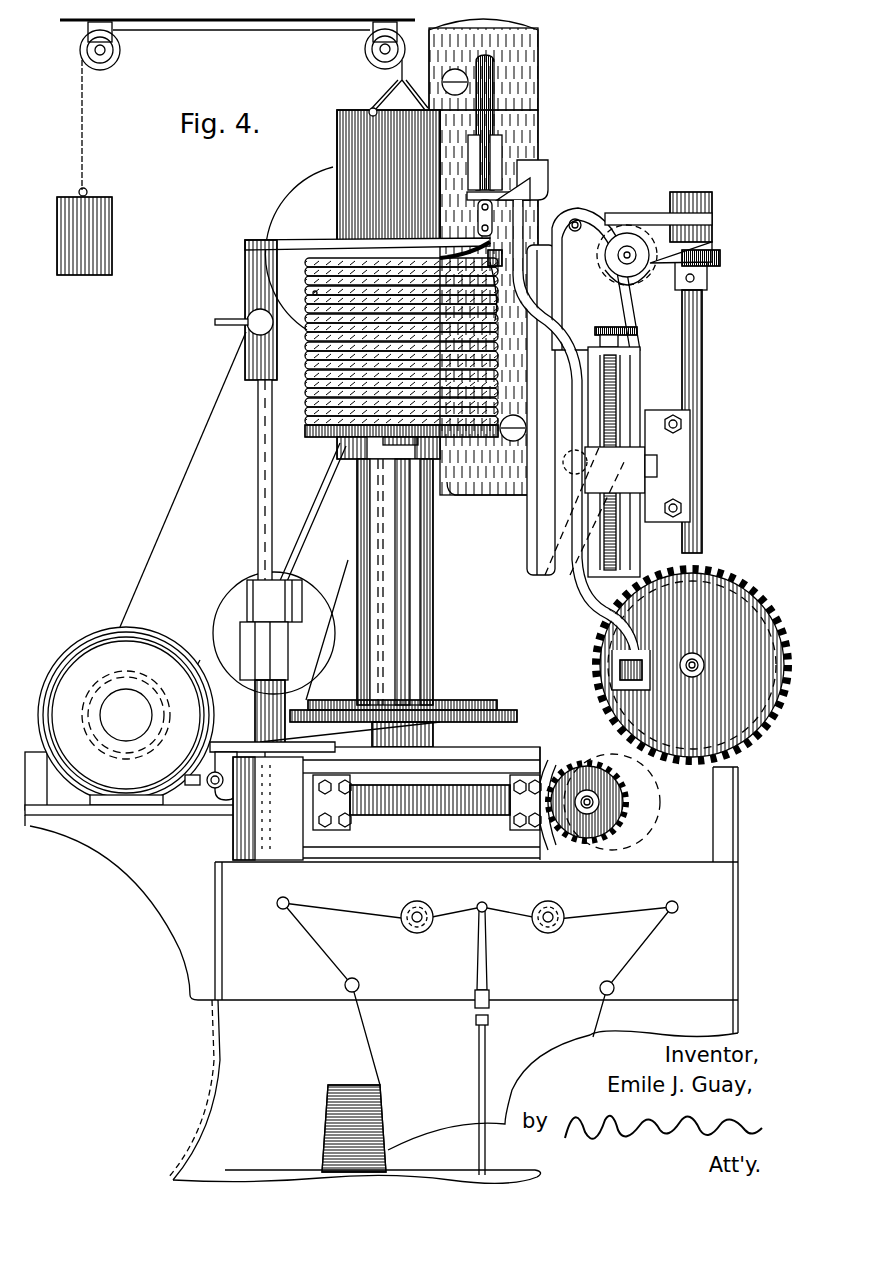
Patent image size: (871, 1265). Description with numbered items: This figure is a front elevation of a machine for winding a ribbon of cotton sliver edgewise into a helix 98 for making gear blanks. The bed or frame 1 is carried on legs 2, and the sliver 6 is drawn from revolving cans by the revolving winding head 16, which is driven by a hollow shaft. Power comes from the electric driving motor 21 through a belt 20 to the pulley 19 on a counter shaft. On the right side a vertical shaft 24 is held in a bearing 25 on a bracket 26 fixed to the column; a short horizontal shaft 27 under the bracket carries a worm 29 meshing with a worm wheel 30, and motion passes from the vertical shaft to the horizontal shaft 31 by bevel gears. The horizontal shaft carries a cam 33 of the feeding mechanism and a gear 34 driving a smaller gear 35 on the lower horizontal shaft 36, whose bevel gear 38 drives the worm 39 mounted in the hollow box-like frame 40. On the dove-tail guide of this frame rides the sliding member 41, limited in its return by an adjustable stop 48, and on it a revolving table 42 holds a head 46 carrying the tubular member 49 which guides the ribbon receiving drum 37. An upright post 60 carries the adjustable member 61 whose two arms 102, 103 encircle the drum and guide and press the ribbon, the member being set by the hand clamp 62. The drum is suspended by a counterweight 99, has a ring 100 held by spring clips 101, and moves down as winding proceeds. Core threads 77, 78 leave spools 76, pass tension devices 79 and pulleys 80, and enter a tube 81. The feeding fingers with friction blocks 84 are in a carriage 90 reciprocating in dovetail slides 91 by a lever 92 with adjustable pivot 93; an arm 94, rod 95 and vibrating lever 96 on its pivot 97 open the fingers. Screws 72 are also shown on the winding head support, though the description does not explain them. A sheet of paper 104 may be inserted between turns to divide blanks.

The bed or frame 1 is at (476, 900).
The legs 2 is at (220, 1067).
The sliver 6 is at (495, 112).
The revolving winding head 16 is at (533, 144).
The pulley 19 is at (330, 186).
The belt 20 is at (194, 450).
The electric driving motor 21 is at (130, 721).
The vertical shaft 24 is at (703, 358).
The bearing 25 is at (713, 212).
The bracket 26 is at (632, 232).
The short horizontal shaft 27 is at (634, 291).
The worm 29 is at (690, 284).
The worm wheel 30 is at (722, 258).
The horizontal shaft 31 is at (705, 668).
The cam 33 is at (620, 660).
The gear 34 is at (762, 738).
The smaller gear 35 is at (640, 835).
The lower horizontal shaft 36 is at (600, 803).
The ribbon receiving drum 37 is at (388, 176).
The bevel gear 38 is at (545, 852).
The worm 39 is at (450, 816).
The hollow box-like frame 40 is at (268, 808).
The sliding member 41 is at (512, 752).
The revolving table 42 is at (515, 711).
The head 46 is at (465, 702).
The adjustable stop 48 is at (203, 785).
The tubular member 49 is at (433, 556).
The upright post 60 is at (258, 460).
The adjustable member 61 is at (300, 244).
The hand clamp 62 is at (230, 319).
The screw 72 is at (468, 81).
The spools 76 is at (358, 1088).
The thread 77 is at (320, 950).
The thread 78 is at (648, 935).
The tension devices 79 is at (283, 903).
The pulleys 80 is at (403, 911).
The tube 81 is at (478, 1046).
The friction block 84 is at (502, 258).
The carriage 90 is at (548, 185).
The dovetail slides 91 is at (535, 182).
The lever 92 is at (523, 276).
The adjustable pivot 93 is at (662, 466).
The arm 94 is at (493, 212).
The rod 95 is at (556, 222).
The vibrating lever 96 is at (580, 297).
The pivot 97 is at (557, 500).
The helix 98 is at (308, 396).
The counterweight 99 is at (113, 226).
The ring 100 is at (337, 439).
The spring clips 101 is at (355, 464).
The arm 102 is at (440, 250).
The arm 103 is at (497, 320).
The sheet of paper 104 is at (315, 293).